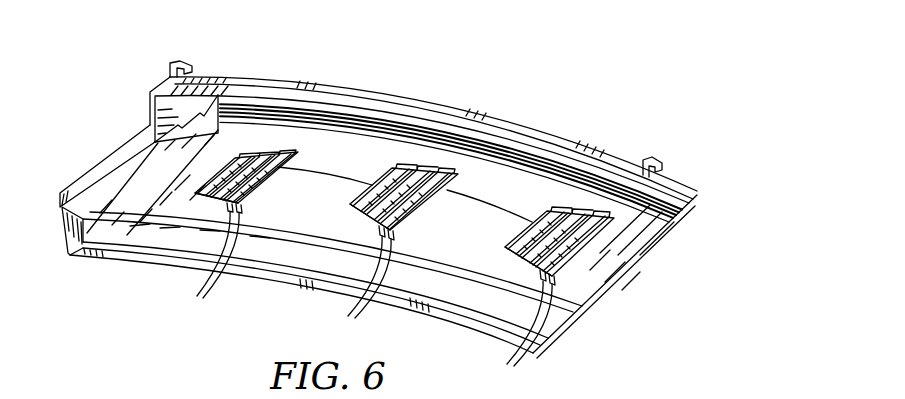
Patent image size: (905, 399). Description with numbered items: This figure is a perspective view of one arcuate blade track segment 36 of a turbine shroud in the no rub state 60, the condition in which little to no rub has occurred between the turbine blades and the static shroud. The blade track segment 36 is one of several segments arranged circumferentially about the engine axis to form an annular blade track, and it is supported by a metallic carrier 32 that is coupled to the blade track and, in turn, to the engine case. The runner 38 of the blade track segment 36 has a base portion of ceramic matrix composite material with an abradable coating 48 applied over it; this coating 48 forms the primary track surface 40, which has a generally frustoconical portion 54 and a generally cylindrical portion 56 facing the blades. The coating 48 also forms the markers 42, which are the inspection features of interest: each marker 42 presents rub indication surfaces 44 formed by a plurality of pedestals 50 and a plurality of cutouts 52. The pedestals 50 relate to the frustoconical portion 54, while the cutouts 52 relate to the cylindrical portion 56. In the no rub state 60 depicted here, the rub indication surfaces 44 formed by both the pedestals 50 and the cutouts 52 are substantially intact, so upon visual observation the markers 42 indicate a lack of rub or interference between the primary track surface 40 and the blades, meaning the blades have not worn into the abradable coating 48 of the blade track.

The metallic carrier 32 is at (216, 73).
The blade track segment 36 is at (704, 312).
The runner 38 is at (672, 240).
The primary track surface 40 is at (332, 139).
The marker 42 is at (273, 141).
The rub indication surfaces 44 is at (295, 151).
The coating 48 is at (238, 143).
The pedestals 50 is at (262, 141).
The cutouts 52 is at (202, 209).
The generally frustoconical portion 54 is at (320, 168).
The generally cylindrical portion 56 is at (288, 207).
The no rub state 60 is at (663, 111).